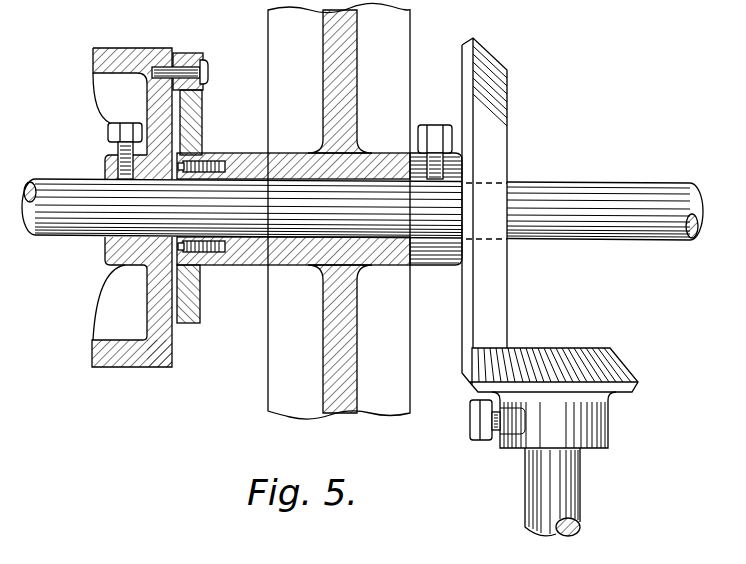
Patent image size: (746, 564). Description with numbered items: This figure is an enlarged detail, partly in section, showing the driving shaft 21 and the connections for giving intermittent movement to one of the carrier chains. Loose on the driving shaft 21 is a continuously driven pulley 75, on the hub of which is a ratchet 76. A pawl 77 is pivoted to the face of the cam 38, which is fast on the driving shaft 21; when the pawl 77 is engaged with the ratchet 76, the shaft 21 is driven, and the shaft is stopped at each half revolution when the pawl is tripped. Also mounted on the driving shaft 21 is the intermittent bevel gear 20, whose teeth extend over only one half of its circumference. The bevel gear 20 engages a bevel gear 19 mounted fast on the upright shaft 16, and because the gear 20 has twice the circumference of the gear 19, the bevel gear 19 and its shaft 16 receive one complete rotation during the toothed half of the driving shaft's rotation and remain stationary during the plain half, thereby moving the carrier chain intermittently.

The upright shaft 16 is at (570, 484).
The bevel gear 19 is at (646, 364).
The intermittent bevel gear 20 is at (497, 167).
The driving shaft 21 is at (60, 179).
The cam 38 is at (93, 59).
The pulley 75 is at (280, 28).
The ratchet 76 is at (188, 128).
The pawl 77 is at (203, 88).